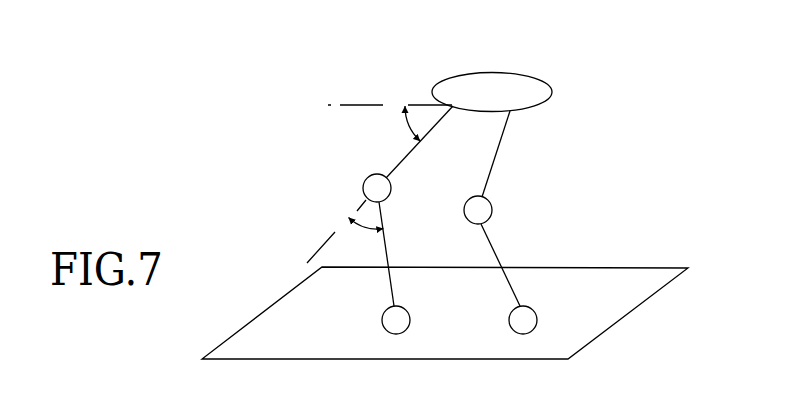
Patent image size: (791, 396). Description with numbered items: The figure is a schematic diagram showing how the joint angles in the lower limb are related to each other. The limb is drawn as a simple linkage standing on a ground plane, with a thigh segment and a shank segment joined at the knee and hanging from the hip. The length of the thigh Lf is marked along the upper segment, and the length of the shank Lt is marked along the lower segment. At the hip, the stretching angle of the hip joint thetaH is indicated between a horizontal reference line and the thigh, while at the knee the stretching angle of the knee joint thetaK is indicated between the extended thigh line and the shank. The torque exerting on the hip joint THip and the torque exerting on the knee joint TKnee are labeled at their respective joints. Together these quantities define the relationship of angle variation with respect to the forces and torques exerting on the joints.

The torque exerting on the hip joint THip is at (492, 111).
The torque exerting on the knee joint TKnee is at (410, 197).
The stretching angle of the hip joint thetaH is at (397, 126).
The stretching angle of the knee joint thetaK is at (364, 243).
The length of the thigh Lf is at (402, 153).
The length of the shank Lt is at (390, 288).